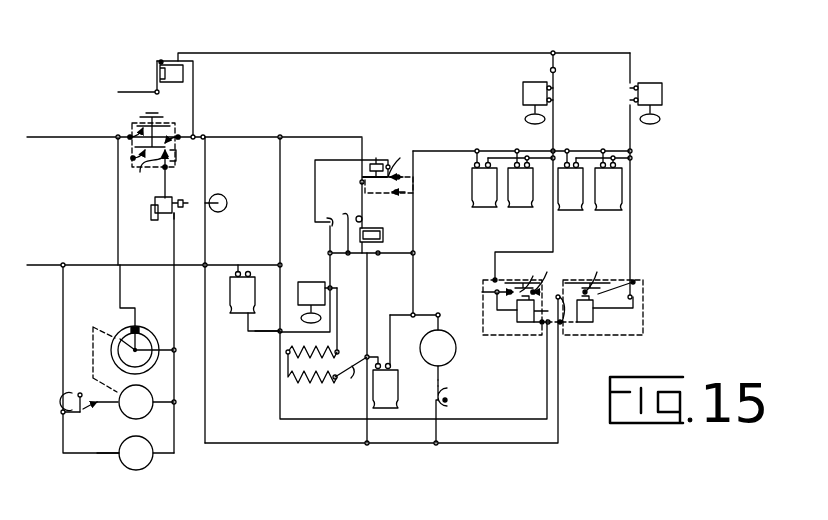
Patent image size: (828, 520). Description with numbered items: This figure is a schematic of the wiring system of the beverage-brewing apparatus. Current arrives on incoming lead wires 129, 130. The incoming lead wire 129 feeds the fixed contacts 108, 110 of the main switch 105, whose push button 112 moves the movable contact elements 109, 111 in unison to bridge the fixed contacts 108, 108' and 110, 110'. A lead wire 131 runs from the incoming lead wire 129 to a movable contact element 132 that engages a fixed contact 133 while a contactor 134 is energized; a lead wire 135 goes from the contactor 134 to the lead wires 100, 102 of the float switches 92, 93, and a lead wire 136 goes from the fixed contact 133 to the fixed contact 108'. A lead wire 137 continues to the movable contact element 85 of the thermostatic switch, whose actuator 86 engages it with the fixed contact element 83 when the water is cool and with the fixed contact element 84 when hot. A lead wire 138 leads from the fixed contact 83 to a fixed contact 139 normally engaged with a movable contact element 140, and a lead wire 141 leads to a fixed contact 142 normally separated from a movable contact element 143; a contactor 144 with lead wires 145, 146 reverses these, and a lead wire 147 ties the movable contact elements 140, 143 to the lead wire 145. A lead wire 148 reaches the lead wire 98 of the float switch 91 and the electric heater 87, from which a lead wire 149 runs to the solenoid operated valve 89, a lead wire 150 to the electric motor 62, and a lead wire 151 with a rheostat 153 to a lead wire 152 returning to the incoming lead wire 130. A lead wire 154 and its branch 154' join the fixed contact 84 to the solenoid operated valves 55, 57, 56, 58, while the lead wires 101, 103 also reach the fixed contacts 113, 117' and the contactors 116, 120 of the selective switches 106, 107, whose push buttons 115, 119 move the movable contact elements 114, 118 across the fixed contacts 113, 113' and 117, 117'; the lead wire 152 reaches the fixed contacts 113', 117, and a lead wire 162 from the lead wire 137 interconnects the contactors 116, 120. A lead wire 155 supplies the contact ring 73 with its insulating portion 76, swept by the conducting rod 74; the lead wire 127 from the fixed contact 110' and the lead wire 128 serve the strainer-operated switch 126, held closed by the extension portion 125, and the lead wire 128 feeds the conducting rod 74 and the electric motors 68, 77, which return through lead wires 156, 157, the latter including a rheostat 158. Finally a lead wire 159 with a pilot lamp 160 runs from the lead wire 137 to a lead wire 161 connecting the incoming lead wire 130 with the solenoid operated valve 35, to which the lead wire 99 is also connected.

The solenoid operated valve 35 is at (240, 326).
The solenoid operated valve 55 is at (484, 178).
The solenoid operated valve 56 is at (570, 179).
The solenoid operated valve 57 is at (520, 178).
The solenoid operated valve 58 is at (608, 179).
The electric motor 62 is at (456, 348).
The electric motor 68 is at (144, 469).
The contact ring 73 is at (120, 328).
The conducting rod 74 is at (140, 344).
The insulating portion 76 is at (139, 327).
The electric motor 77 is at (145, 416).
The fixed contact element 83 is at (397, 160).
The fixed contact element 84 is at (406, 193).
The movable contact element 85 is at (404, 177).
The actuator 86 is at (376, 158).
The electric heater 87 is at (304, 382).
The solenoid operated valve 89 is at (397, 381).
The float switch 91 is at (317, 302).
The float switch 92 is at (523, 93).
The float switch 93 is at (662, 95).
The lead wire 98 is at (337, 299).
The lead wire 99 is at (270, 334).
The lead wire 100 is at (555, 71).
The lead wire 101 is at (554, 130).
The lead wire 102 is at (631, 58).
The lead wire 103 is at (630, 143).
The main switch 105 is at (108, 118).
The selective switch 106 is at (486, 272).
The selective switch 107 is at (648, 313).
The fixed contact 108 is at (114, 144).
The fixed contact 108' is at (201, 127).
The movable contact element 109 is at (161, 126).
The fixed contact 110 is at (135, 168).
The fixed contact 110' is at (146, 176).
The movable contact element 111 is at (177, 156).
The push button 112 is at (148, 116).
The fixed contact 113 is at (488, 300).
The fixed contact 113' is at (555, 272).
The movable contact element 114 is at (505, 278).
The push button 115 is at (548, 262).
The contactor 116 is at (527, 322).
The fixed contact 117 is at (576, 327).
The fixed contact 117' is at (646, 285).
The movable contact element 118 is at (596, 279).
The push button 119 is at (586, 270).
The contactor 120 is at (593, 320).
The extension portion 125 is at (175, 212).
The switch 126 is at (158, 220).
The lead wire 127 is at (165, 181).
The lead wire 128 is at (174, 250).
The incoming lead wire 129 is at (58, 138).
The incoming lead wire 130 is at (30, 267).
The lead wire 131 is at (120, 92).
The movable contact element 132 is at (157, 68).
The fixed contact 133 is at (160, 61).
The contactor 134 is at (173, 74).
The lead wire 135 is at (274, 53).
The lead wire 136 is at (193, 93).
The lead wire 137 is at (302, 138).
The lead wire 138 is at (315, 170).
The fixed contact 139 is at (327, 226).
The movable contact element 140 is at (328, 241).
The lead wire 141 is at (360, 185).
The fixed contact 142 is at (362, 222).
The movable contact element 143 is at (345, 219).
The contactor 144 is at (371, 240).
The lead wire 145 is at (381, 238).
The lead wire 146 is at (367, 291).
The lead wire 147 is at (360, 256).
The lead wire 148 is at (328, 264).
The lead wire 149 is at (360, 383).
The lead wire 150 is at (390, 331).
The lead wire 151 is at (441, 378).
The lead wire 152 is at (265, 443).
The rheostat 153 is at (457, 401).
The lead wire 154 is at (419, 234).
The conductor 154' is at (521, 145).
The lead wire 155 is at (118, 227).
The lead wire 156 is at (102, 456).
The lead wire 157 is at (86, 407).
The rheostat 158 is at (92, 377).
The lead wire 159 is at (205, 246).
The pilot lamp 160 is at (227, 203).
The lead wire 161 is at (154, 269).
The lead wire 162 is at (280, 162).